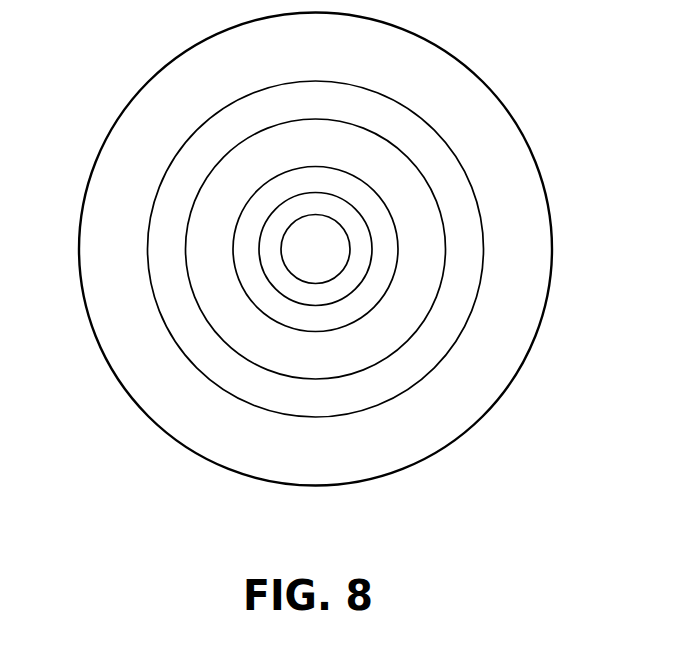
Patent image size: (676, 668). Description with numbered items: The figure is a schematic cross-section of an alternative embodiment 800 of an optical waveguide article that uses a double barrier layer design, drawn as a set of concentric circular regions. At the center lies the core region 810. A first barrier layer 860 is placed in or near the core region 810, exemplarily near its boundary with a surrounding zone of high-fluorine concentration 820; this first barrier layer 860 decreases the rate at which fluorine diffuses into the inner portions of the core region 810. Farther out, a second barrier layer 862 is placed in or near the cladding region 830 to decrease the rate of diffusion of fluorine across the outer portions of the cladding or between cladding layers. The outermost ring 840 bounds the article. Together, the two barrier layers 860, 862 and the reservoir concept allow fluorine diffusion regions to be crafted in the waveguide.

The alternative embodiment 800 is at (315, 277).
The core region 810 is at (312, 250).
The first barrier layer 860 is at (330, 287).
The zone of high-fluorine concentration 820 is at (358, 298).
The second barrier layer 862 is at (390, 330).
The cladding region 830 is at (442, 342).
The outer ring 840 is at (505, 360).